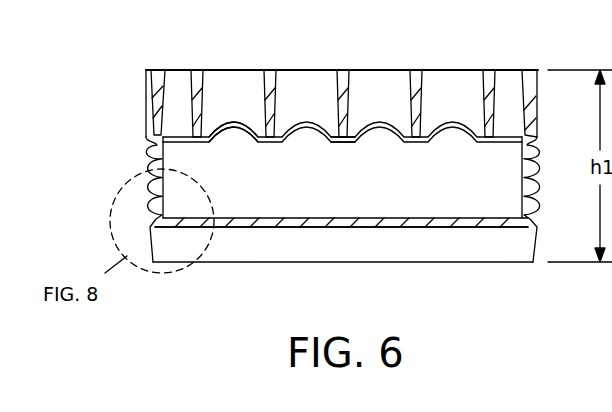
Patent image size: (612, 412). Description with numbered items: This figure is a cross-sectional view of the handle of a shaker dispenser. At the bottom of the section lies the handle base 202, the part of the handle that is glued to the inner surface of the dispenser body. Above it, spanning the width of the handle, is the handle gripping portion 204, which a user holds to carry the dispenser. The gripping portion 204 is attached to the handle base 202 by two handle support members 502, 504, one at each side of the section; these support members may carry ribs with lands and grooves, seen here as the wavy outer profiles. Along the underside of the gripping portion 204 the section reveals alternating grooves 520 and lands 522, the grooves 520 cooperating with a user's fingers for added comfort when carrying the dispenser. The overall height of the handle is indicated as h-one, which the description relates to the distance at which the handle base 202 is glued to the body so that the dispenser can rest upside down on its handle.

The handle gripping portion 204 is at (307, 88).
The handle base 202 is at (493, 250).
The handle support member 502 is at (150, 168).
The handle support member 504 is at (525, 180).
The grooves 520 is at (231, 128).
The lands 522 is at (342, 147).